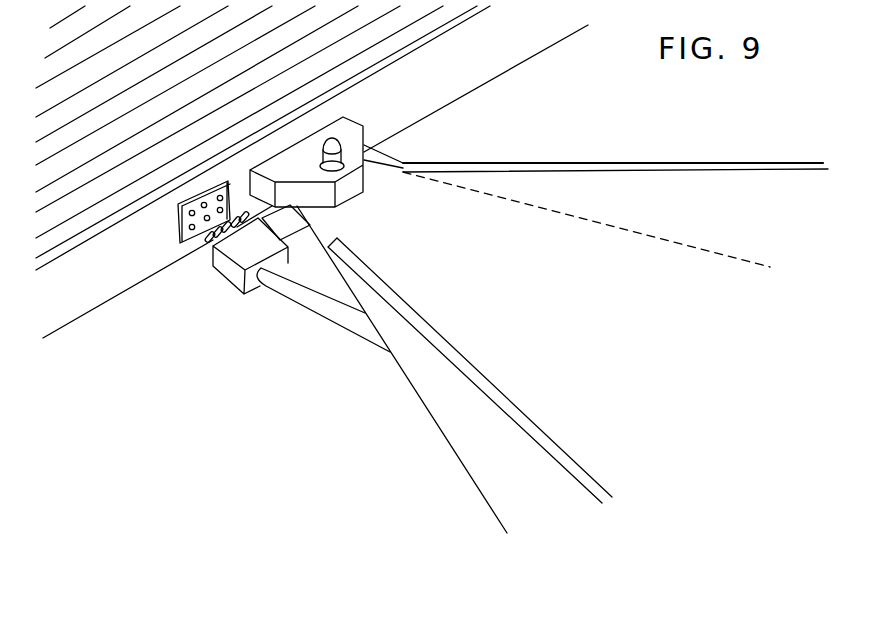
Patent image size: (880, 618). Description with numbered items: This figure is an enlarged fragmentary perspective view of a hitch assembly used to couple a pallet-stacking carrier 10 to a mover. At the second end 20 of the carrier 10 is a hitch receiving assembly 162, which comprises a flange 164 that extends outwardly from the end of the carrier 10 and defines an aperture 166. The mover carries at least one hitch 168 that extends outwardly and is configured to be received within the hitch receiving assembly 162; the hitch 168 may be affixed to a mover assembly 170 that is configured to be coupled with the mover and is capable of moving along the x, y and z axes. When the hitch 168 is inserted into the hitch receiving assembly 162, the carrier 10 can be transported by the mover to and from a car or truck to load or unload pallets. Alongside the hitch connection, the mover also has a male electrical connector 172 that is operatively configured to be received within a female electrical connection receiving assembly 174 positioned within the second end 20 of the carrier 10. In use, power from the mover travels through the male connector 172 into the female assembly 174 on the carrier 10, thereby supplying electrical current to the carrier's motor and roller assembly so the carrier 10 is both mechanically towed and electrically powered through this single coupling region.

The carrier 10 is at (511, 45).
The second end 20 is at (102, 285).
The hitch receiving assembly 162 is at (348, 132).
The flange 164 is at (355, 145).
The aperture 166 is at (323, 162).
The hitch 168 is at (328, 157).
The mover assembly 170 is at (618, 323).
The male electrical connector 172 is at (242, 293).
The female electrical connection receiving assembly 174 is at (203, 197).